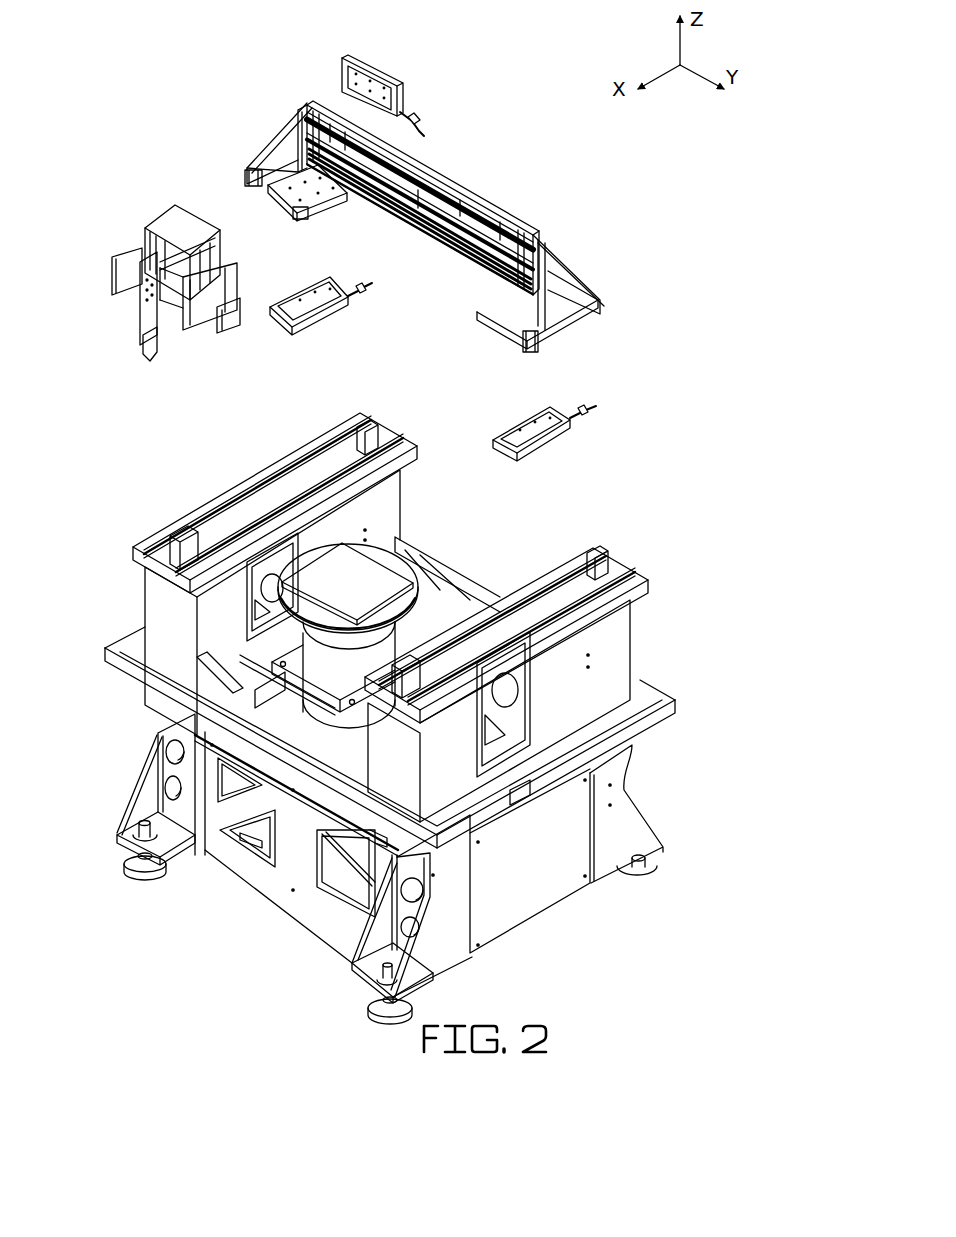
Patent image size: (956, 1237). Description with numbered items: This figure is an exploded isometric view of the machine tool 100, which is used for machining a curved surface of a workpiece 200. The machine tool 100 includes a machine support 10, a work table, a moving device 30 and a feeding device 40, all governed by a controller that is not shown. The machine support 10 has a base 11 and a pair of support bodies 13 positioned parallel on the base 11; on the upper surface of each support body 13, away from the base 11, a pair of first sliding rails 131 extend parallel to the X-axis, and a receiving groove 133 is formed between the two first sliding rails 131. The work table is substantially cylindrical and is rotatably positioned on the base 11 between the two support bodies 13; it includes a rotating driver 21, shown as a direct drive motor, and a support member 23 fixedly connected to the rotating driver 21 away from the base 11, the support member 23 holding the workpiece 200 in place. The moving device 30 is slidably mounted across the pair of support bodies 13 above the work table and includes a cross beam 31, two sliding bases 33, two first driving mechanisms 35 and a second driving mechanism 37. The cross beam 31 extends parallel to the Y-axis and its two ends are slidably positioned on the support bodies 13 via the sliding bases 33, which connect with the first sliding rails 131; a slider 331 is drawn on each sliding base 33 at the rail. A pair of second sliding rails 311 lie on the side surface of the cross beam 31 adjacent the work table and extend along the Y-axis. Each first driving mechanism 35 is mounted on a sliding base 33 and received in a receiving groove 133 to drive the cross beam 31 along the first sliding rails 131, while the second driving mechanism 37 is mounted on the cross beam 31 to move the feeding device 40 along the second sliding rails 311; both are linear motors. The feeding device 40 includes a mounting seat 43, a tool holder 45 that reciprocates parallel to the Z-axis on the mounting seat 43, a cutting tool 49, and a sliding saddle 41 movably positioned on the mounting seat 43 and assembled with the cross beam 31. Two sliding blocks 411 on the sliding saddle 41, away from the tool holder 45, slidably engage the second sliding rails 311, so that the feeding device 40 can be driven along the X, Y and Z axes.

The machine tool 100 is at (266, 52).
The machine support 10 is at (706, 729).
The base 11 is at (617, 825).
The support bodies 13 is at (595, 668).
The first sliding rails 131 is at (632, 583).
The receiving groove 133 is at (612, 578).
The workpiece 200 is at (322, 572).
The rotating driver 21 is at (330, 672).
The support member 23 is at (299, 604).
The moving device 30 is at (553, 151).
The cross beam 31 is at (509, 206).
The second sliding rails 311 is at (446, 181).
The sliding bases 33 is at (553, 272).
The support sliders 331 is at (528, 344).
The first driving mechanisms 35 is at (322, 313).
The second driving mechanism 37 is at (403, 106).
The feeding device 40 is at (138, 347).
The sliding saddle 41 is at (228, 276).
The sliding blocks 411 is at (226, 313).
The mounting seat 43 is at (175, 230).
The tool holder 45 is at (152, 300).
The cutting tool 49 is at (158, 348).